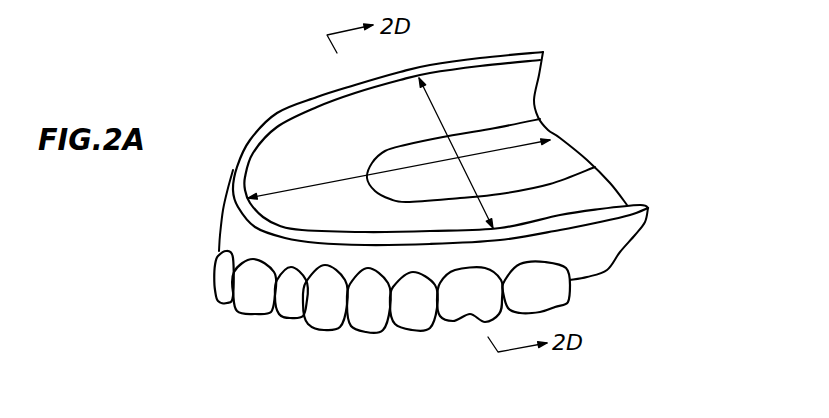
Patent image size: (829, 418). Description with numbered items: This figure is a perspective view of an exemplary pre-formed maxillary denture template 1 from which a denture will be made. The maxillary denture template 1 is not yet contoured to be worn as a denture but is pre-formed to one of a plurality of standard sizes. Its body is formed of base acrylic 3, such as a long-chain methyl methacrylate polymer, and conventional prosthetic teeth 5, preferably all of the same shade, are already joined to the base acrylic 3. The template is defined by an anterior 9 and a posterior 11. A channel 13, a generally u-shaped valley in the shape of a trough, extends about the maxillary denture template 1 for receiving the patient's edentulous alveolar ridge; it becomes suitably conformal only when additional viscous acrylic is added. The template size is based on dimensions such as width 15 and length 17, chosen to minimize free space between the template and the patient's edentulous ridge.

The maxillary denture template 1 is at (416, 153).
The base acrylic 3 is at (392, 313).
The teeth 5 is at (253, 300).
The anterior 9 is at (223, 213).
The posterior 11 is at (605, 270).
The channel 13 is at (328, 128).
The width 15 is at (440, 113).
The length 17 is at (345, 181).